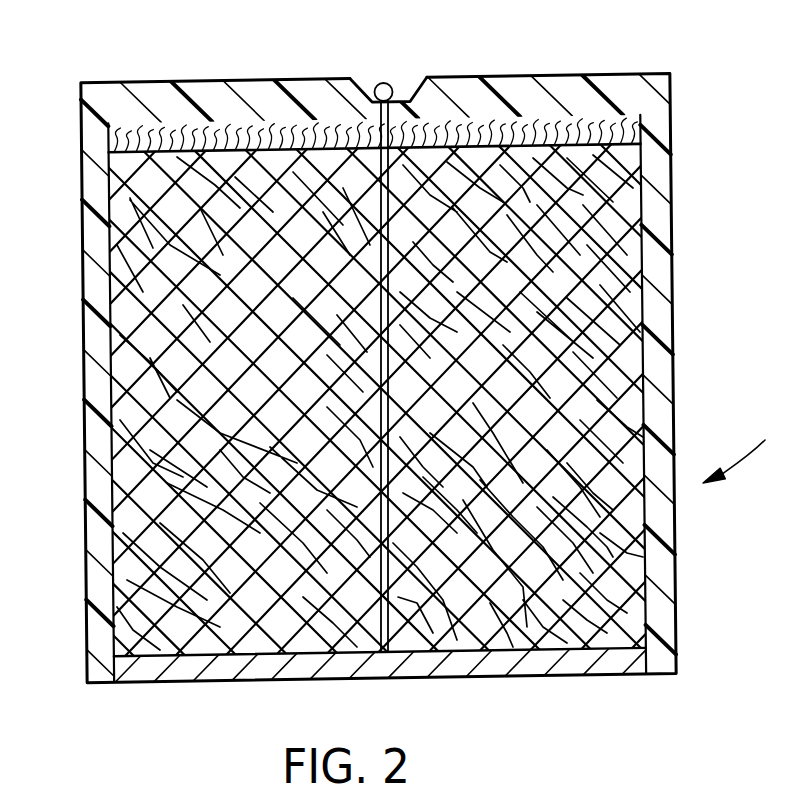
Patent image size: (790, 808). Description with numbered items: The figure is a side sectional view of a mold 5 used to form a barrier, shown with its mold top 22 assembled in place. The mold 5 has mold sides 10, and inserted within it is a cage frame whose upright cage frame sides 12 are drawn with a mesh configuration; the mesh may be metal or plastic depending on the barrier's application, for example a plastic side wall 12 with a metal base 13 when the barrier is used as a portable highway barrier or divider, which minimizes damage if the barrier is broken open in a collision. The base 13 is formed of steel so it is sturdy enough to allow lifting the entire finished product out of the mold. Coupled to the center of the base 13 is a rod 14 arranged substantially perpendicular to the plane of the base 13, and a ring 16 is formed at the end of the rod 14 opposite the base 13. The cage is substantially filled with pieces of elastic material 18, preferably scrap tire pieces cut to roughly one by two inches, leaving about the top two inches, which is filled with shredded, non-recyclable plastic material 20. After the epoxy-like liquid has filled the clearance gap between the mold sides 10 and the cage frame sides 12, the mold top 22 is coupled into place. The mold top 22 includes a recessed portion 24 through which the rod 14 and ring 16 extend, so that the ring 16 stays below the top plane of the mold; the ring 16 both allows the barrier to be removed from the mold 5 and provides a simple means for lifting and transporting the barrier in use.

The mold 5 is at (743, 452).
The mold sides 10 is at (675, 385).
The cage frame sides 12 is at (640, 232).
The base 13 is at (550, 676).
The rod 14 is at (388, 370).
The ring 16 is at (392, 85).
The elastic material 18 is at (158, 298).
The shredded non-recyclable plastic material 20 is at (180, 120).
The mold top 22 is at (572, 74).
The recessed portion 24 is at (372, 103).